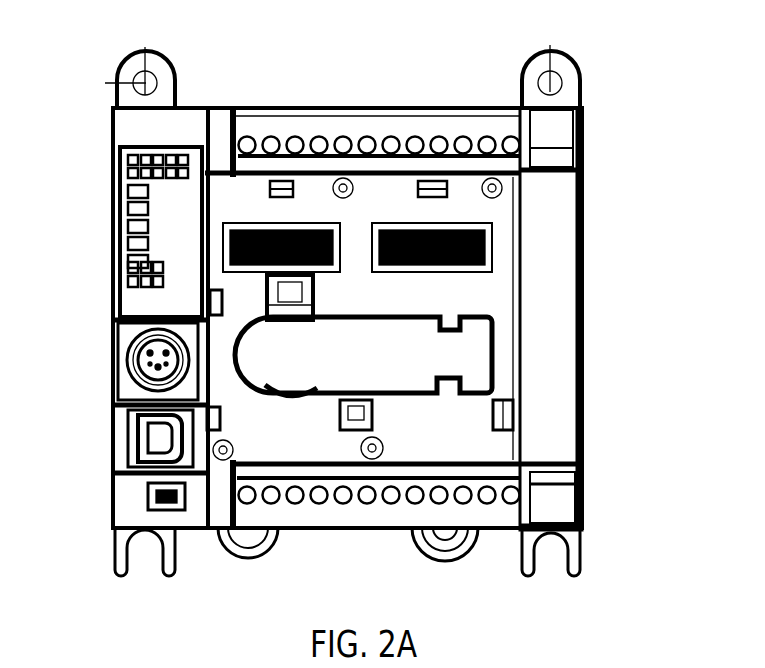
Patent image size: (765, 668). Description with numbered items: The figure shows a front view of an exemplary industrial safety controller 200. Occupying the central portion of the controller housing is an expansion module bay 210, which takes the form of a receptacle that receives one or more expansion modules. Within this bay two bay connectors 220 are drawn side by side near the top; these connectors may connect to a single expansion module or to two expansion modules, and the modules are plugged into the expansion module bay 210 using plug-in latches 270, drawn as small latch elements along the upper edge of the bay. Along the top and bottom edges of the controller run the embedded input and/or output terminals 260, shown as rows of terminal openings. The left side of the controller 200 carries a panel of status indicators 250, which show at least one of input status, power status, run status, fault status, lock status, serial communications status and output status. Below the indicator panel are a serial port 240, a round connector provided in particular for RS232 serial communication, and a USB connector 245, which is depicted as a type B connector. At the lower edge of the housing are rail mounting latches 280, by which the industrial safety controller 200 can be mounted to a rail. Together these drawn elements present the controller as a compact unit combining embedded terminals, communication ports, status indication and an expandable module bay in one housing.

The industrial safety controller 200 is at (616, 211).
The expansion module bay 210 is at (503, 288).
The bay connectors 220 is at (242, 222).
The serial port 240 is at (110, 353).
The USB connector 245 is at (127, 433).
The status indicators 250 is at (125, 180).
The input and/or output terminals 260 is at (394, 123).
The plug-in latches 270 is at (283, 180).
The rail mounting latches 280 is at (430, 547).